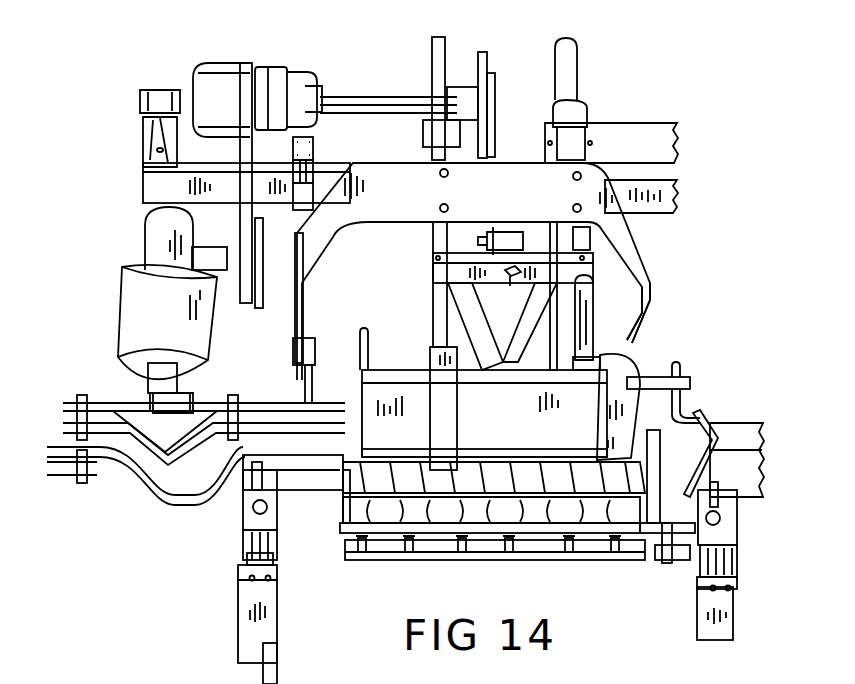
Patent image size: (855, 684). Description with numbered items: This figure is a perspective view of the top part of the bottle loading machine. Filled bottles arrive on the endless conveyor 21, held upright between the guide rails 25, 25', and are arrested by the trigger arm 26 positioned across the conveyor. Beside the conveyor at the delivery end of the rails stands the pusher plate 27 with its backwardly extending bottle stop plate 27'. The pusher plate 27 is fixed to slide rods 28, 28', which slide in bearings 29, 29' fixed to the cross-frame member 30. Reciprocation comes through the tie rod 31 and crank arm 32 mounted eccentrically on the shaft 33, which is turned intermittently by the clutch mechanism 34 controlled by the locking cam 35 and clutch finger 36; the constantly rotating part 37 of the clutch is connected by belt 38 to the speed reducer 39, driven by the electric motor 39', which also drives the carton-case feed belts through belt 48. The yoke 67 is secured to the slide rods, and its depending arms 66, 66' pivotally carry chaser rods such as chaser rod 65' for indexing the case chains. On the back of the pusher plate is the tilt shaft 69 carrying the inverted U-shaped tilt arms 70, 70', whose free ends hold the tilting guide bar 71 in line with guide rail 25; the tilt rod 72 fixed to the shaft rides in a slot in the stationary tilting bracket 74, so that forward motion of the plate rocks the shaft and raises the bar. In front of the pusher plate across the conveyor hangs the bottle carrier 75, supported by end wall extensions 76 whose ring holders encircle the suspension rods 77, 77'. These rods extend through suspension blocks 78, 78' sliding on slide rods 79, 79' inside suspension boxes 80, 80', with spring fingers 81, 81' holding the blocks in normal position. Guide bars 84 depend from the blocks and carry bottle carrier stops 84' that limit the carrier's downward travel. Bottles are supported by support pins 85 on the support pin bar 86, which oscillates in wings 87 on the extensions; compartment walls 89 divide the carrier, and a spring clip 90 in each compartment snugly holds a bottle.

The endless conveyor 21 is at (757, 476).
The guide rail 25 is at (146, 489).
The guide rail 25' is at (198, 417).
The trigger arm 26 is at (672, 446).
The pusher plate 27 is at (484, 396).
The bottle stop plate 27' is at (385, 335).
The slide rod 28 is at (460, 94).
The slide rod 28' is at (586, 65).
The bearing 29 is at (421, 135).
The bearing 29' is at (593, 122).
The cross-frame member 30 is at (637, 123).
The tie rod 31 is at (541, 283).
The crank arm 32 is at (495, 156).
The shaft 33 is at (362, 97).
The clutch mechanism 34 is at (278, 67).
The locking cam 35 is at (311, 82).
The clutch finger 36 is at (313, 138).
The constantly rotating part 37 is at (215, 64).
The belt 38 is at (240, 150).
The speed reducer 39 is at (147, 238).
The electric motor 39' is at (148, 339).
The belt 48 is at (255, 233).
The chaser rod 65' is at (210, 524).
The depending arm 66 is at (656, 313).
The depending arm 66' is at (285, 299).
The yoke 67 is at (408, 216).
The tilt shaft 69 is at (653, 378).
The tilt arm 70 is at (462, 408).
The tilt arm 70' is at (601, 407).
The tilting guide bar 71 is at (495, 457).
The tilt rod 72 is at (684, 398).
The tilting bracket 74 is at (713, 445).
The bottle carrier 75 is at (392, 541).
The end wall extension 76 is at (516, 532).
The suspension rod 77 is at (745, 517).
The suspension rod 77' is at (233, 502).
The suspension block 78 is at (767, 551).
The suspension block 78' is at (233, 548).
The slide rod 79 is at (748, 579).
The slide rod 79' is at (288, 576).
The suspension box 80 is at (743, 570).
The suspension box 80' is at (235, 582).
The spring finger 81 is at (752, 504).
The spring finger 81' is at (218, 475).
The guide bar 84 is at (503, 621).
The bottle carrier stop 84' is at (291, 663).
The bottle support pin 85 is at (510, 551).
The support pin bar 86 is at (583, 561).
The wing 87 is at (491, 566).
The compartment wall 89 is at (433, 511).
The spring clip 90 is at (490, 509).